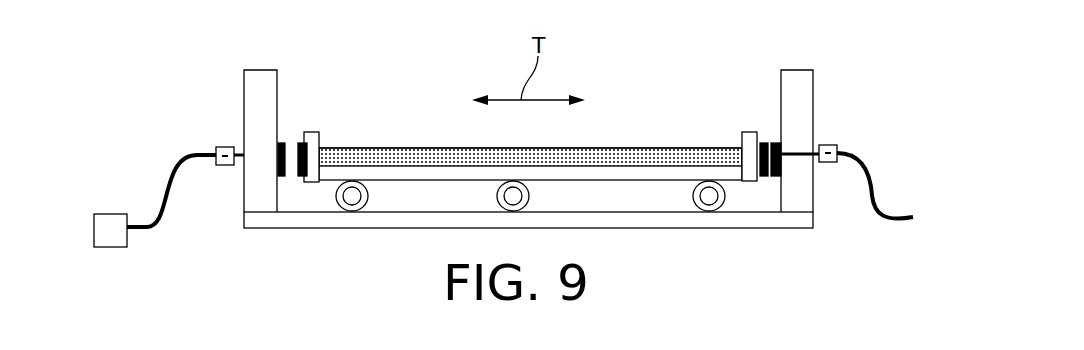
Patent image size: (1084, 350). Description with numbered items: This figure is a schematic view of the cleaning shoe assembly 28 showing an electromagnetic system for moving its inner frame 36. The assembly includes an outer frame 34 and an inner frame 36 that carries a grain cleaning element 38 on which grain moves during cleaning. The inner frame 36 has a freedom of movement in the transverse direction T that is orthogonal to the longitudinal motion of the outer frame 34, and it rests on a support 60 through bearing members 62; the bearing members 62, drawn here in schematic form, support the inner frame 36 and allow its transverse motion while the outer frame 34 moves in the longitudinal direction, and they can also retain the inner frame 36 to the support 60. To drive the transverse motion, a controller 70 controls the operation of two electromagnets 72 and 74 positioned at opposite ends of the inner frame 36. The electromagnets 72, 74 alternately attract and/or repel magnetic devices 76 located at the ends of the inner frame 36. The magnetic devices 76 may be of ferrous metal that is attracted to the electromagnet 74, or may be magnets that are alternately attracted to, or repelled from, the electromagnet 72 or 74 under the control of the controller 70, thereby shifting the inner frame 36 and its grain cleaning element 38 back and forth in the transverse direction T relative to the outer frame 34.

The cleaning shoe assembly 28 is at (808, 27).
The outer frame 34 is at (813, 105).
The inner frame 36 is at (313, 132).
The grain cleaning element 38 is at (618, 148).
The support 60 is at (263, 228).
The bearing members 62 is at (497, 192).
The controller 70 is at (112, 214).
The electromagnet 72 is at (281, 143).
The electromagnet 74 is at (780, 143).
The magnetic devices 76 is at (302, 143).